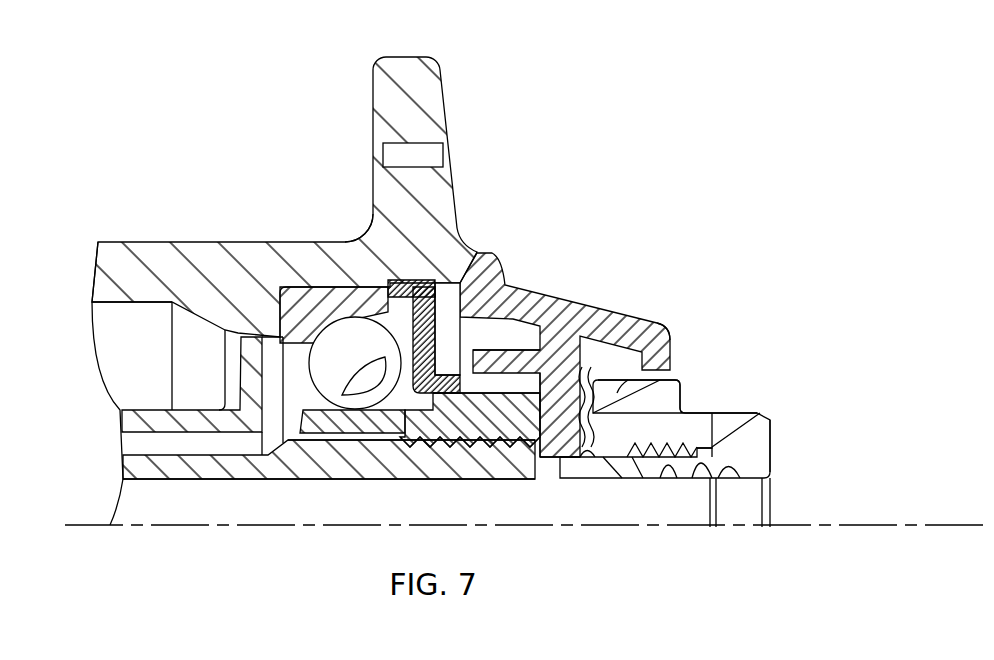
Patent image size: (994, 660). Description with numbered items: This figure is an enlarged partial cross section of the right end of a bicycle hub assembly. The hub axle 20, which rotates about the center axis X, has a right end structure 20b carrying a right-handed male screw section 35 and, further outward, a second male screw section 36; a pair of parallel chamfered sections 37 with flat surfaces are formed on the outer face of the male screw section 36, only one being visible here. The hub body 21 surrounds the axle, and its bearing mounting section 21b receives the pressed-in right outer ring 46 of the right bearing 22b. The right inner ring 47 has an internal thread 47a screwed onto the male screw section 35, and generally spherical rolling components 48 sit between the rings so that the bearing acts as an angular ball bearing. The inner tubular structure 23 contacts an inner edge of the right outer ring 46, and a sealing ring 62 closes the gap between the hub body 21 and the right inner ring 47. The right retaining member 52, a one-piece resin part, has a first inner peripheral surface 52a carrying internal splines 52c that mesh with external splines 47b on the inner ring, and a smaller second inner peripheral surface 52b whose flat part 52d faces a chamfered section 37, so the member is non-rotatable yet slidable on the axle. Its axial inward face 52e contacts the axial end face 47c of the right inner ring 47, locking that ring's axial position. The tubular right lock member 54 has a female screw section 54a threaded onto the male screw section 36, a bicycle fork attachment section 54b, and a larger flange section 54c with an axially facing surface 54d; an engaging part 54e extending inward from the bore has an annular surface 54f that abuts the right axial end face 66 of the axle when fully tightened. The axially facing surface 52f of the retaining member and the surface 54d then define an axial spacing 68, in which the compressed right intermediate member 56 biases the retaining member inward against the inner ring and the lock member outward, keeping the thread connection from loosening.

The hub axle 20 is at (145, 449).
The right end structure 20b is at (186, 500).
The hub body 21 is at (352, 202).
The bearing mounting section 21b is at (282, 272).
The right bearing 22b is at (172, 367).
The inner tubular structure 23 is at (137, 407).
The male screw section 35 is at (465, 447).
The male screw section 36 is at (682, 440).
The chamfered section 37 is at (611, 462).
The right outer ring 46 is at (300, 303).
The right inner ring 47 is at (308, 417).
The internal thread 47a is at (428, 447).
The external splines 47b is at (480, 418).
The axial end face 47c is at (500, 447).
The rolling component 48 is at (335, 370).
The right retaining member 52 is at (568, 333).
The first inner peripheral surface 52a is at (466, 377).
The second inner peripheral surface 52b is at (569, 462).
The internal splines 52c is at (508, 351).
The flat part 52d is at (553, 460).
The axial inward face 52e is at (526, 350).
The axially facing surface 52f is at (622, 466).
The right lock member 54 is at (750, 410).
The female screw section 54a is at (662, 466).
The bicycle fork attachment section 54b is at (718, 412).
The flange section 54c is at (671, 341).
The axially facing surface 54d is at (680, 413).
The engaging part 54e is at (752, 454).
The annular surface 54f is at (708, 466).
The right intermediate member 56 is at (617, 393).
The sealing ring 62 is at (388, 282).
The right axial end face 66 is at (731, 464).
The axial spacing 68 is at (586, 362).
The center axis X is at (80, 528).